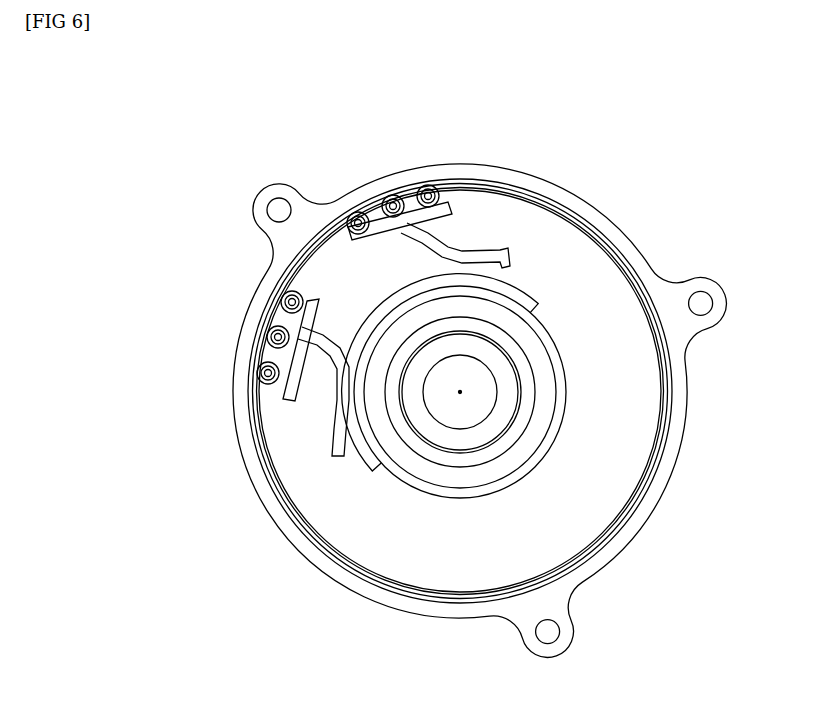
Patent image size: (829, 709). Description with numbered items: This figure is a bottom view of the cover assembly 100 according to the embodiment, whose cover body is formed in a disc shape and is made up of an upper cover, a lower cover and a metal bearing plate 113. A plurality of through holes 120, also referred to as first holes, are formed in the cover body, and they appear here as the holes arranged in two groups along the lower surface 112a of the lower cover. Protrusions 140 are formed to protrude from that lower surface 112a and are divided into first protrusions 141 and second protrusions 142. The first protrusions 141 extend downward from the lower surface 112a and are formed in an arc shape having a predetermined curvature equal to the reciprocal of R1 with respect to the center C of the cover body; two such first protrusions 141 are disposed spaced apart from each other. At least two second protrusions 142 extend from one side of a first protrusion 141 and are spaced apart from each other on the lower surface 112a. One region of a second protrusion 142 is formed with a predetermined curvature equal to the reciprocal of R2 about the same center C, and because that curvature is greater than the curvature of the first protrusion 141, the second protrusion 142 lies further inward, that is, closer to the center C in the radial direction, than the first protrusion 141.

The cover assembly 100 is at (203, 91).
The lower surface of the lower cover 112a is at (628, 438).
The bearing plate 113 is at (587, 212).
The through holes 120 is at (425, 185).
The protrusions 140 is at (170, 402).
The first protrusions 141 is at (449, 200).
The second protrusions 142 is at (497, 285).
The center of the cover body C is at (460, 392).
The radius of curvature of the first protrusion R1 is at (393, 235).
The radius of curvature of the second protrusion R2 is at (460, 392).